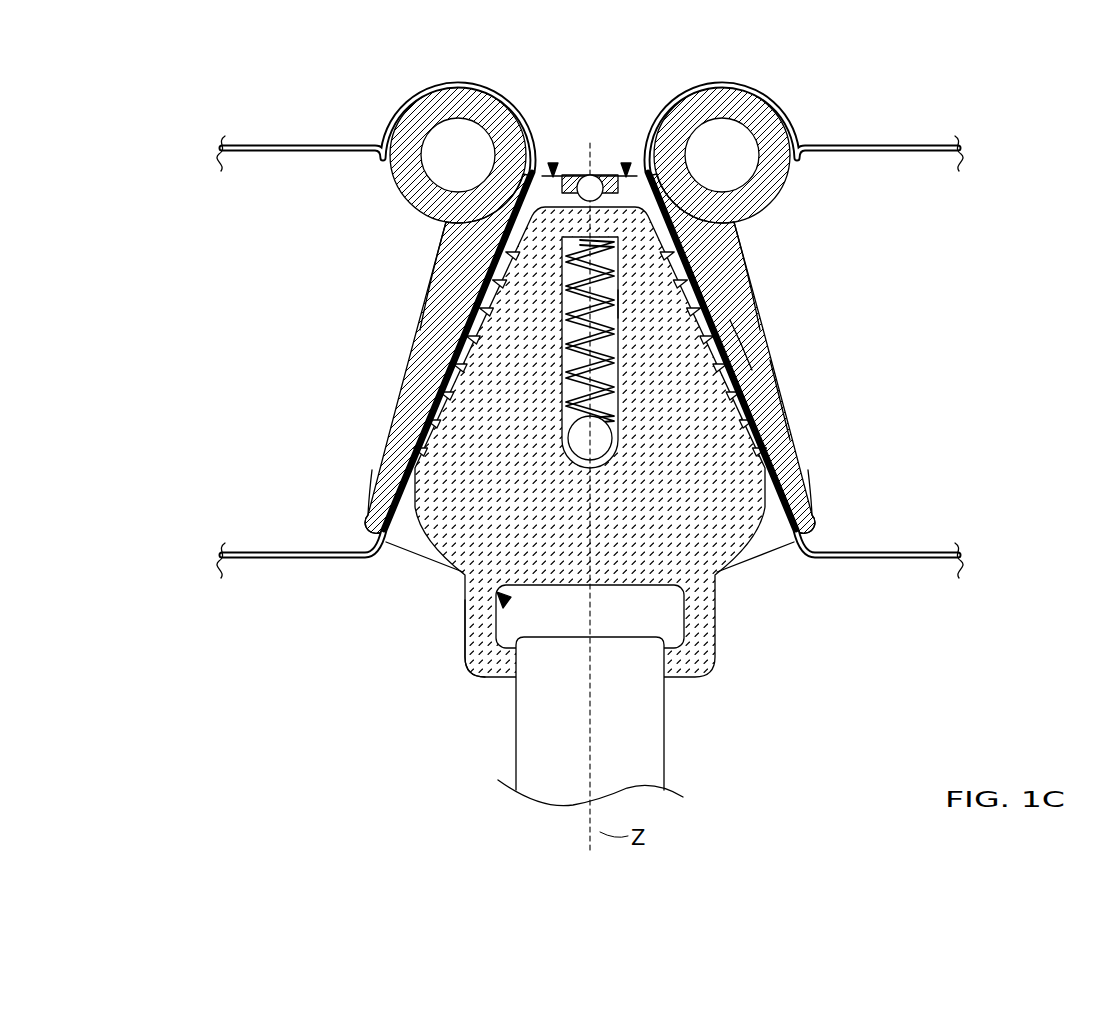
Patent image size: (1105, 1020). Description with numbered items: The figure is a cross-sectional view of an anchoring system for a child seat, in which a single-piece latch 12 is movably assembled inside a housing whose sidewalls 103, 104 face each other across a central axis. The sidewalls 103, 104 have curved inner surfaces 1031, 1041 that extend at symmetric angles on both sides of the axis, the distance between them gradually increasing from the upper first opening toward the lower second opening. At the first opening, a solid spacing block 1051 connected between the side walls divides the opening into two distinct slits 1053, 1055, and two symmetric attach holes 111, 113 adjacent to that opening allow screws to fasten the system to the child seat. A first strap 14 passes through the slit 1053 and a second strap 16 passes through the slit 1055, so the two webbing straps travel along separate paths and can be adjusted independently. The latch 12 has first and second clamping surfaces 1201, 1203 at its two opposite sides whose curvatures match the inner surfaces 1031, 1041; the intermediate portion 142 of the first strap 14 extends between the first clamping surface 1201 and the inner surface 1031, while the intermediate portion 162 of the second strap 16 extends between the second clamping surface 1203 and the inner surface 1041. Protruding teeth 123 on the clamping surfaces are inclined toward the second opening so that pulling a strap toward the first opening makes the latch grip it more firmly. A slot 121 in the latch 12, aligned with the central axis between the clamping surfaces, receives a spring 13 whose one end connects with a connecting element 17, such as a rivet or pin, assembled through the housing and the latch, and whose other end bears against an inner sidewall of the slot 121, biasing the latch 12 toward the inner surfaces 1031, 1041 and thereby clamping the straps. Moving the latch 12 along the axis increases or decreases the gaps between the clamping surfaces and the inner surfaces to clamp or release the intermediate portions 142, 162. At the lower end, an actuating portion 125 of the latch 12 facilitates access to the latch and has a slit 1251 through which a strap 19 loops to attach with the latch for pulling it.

The latch 12 is at (678, 544).
The spring 13 is at (618, 240).
The first strap 14 is at (283, 143).
The second strap 16 is at (910, 145).
The connecting element 17 is at (612, 440).
The strap 19 is at (525, 725).
The sidewall 103 is at (422, 336).
The sidewall 104 is at (777, 370).
The attach hole 111 is at (452, 130).
The attach hole 113 is at (726, 132).
The slot 121 is at (622, 303).
The protruding teeth 123 is at (733, 270).
The actuating portion 125 is at (467, 652).
The intermediate portion 142 is at (423, 400).
The intermediate portion 162 is at (757, 338).
The inner surface 1031 is at (447, 268).
The inner surface 1041 is at (780, 403).
The spacing block 1051 is at (590, 172).
The slit 1053 is at (551, 162).
The slit 1055 is at (628, 162).
The first clamping surface 1201 is at (383, 488).
The second clamping surface 1203 is at (773, 497).
The slit 1251 is at (500, 600).